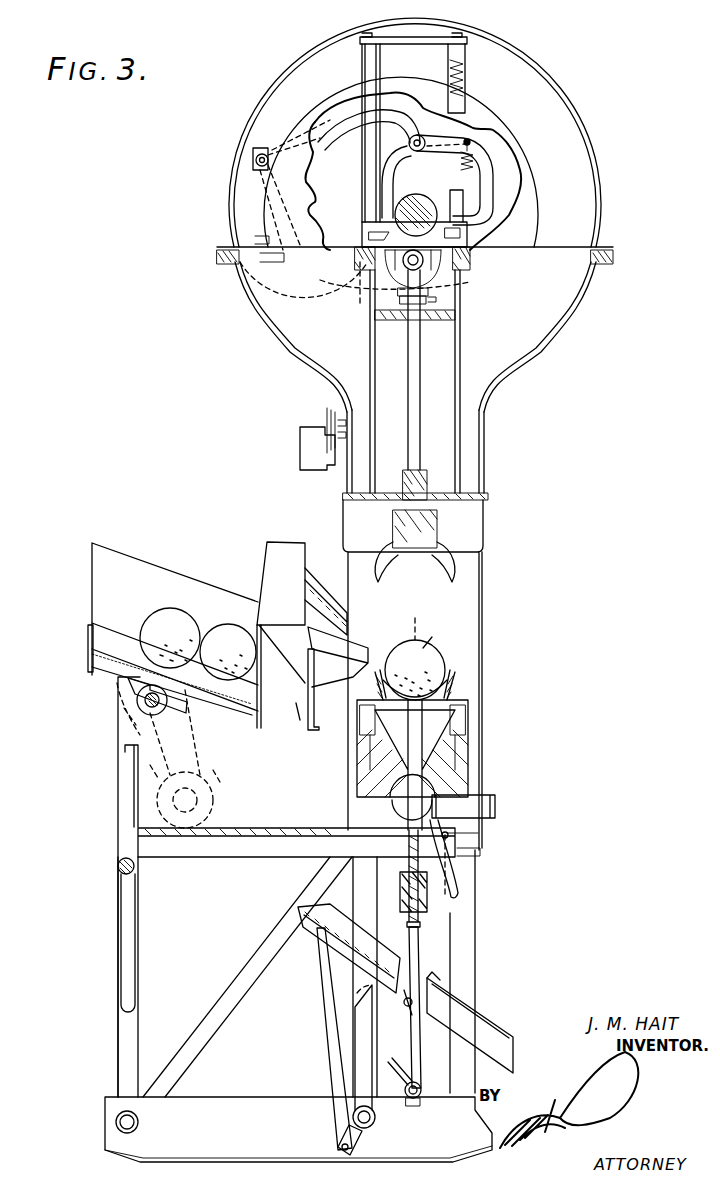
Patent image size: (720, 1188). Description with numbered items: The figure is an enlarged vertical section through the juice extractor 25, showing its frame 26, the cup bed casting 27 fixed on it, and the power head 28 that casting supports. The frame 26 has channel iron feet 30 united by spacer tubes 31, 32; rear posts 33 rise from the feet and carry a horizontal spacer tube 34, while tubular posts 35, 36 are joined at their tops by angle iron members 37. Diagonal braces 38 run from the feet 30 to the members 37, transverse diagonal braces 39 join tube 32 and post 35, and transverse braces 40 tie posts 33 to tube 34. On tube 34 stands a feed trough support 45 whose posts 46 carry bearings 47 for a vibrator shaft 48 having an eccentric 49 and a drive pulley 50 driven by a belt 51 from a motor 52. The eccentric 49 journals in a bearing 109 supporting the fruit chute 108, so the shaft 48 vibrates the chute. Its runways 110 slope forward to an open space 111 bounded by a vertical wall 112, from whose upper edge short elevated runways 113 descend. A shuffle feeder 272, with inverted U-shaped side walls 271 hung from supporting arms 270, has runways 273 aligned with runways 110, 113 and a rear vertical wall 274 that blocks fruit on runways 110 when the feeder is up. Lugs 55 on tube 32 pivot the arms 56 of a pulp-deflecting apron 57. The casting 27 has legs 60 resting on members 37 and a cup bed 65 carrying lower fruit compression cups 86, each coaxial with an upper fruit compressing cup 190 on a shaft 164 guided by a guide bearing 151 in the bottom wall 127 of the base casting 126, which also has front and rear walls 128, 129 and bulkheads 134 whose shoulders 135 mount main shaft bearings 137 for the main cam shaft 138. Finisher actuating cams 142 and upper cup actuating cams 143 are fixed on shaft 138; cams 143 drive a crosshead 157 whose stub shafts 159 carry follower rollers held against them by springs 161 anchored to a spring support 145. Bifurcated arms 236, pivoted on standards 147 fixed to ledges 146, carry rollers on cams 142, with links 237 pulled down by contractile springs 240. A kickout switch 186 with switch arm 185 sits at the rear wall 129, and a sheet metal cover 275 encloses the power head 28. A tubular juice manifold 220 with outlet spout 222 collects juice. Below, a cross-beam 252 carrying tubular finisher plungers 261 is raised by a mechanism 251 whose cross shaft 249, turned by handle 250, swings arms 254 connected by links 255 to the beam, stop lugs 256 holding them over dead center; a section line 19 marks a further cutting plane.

The juice extractor 25 is at (664, 63).
The sheet metal cover 275 is at (597, 154).
The bifurcated arms 236 is at (330, 124).
The ledges 146 is at (300, 262).
The standard 147 is at (253, 168).
The spring support 145 is at (400, 44).
The springs 161 is at (468, 85).
The upper cup actuating cams 143 is at (474, 116).
The links 237 is at (388, 178).
The finisher actuating cams 142 is at (478, 193).
The contractile springs 240 is at (473, 165).
The main cam shaft 138 is at (420, 202).
The main shaft bearings 137 is at (362, 230).
The shoulders 135 is at (356, 263).
The stub shafts 159 is at (419, 277).
The bulkheads 134 is at (333, 345).
The crosshead 157 is at (425, 320).
The shafts 164 is at (412, 398).
The guide bearings 151 is at (419, 478).
The rear wall 129 is at (300, 370).
The base casting 126 is at (535, 350).
The front wall 128 is at (543, 374).
The power head 28 is at (543, 411).
The switch arm 185 is at (326, 422).
The kickout switch 186 is at (305, 453).
The bottom wall 127 is at (376, 502).
The upper fruit compressing cup 190 is at (437, 532).
The fruit chute 108 is at (80, 664).
The runways 110 is at (105, 643).
The side walls 271 is at (276, 557).
The shuffle feeder 272 is at (270, 726).
The shuffle feeder supporting arms 270 is at (320, 590).
The fruit runways 273 is at (282, 652).
The short elevated runways 113 is at (366, 638).
The vertical wall 112 is at (313, 718).
The open space 111 is at (298, 722).
The rear vertical wall 274 is at (265, 718).
The bearing 109 is at (162, 706).
The vibrator shaft 48 is at (137, 698).
The bearings 47 is at (124, 717).
The eccentric 49 is at (166, 718).
The frame wall 46 is at (122, 733).
The feed trough support 45 is at (138, 790).
The drive pulley 50 is at (152, 732).
The belt 51 is at (190, 752).
The motor 52 is at (205, 784).
The cup bed casting 27 is at (478, 650).
The legs 60 is at (479, 658).
The section line 19 is at (412, 632).
The lower fruit compression cups 86 is at (456, 692).
The cup bed 65 is at (470, 746).
The tubular juice manifold 220 is at (395, 812).
The outlet spout 222 is at (472, 797).
The angle iron members 37 is at (236, 860).
The horizontal spacer tube 34 is at (118, 866).
The transverse braces 40 is at (121, 945).
The rear posts 33 is at (120, 1050).
The diagonal braces 38 is at (215, 1001).
The tubular posts 35 is at (355, 887).
The frame 26 is at (487, 907).
The pulp-deflecting apron 57 is at (316, 942).
The arms 56 is at (330, 1010).
The transverse diagonal braces 39 is at (362, 1039).
The spacer tube 32 is at (374, 1119).
The lugs 55 is at (356, 1142).
The channel iron feet 30 is at (250, 1102).
The spacer tube 31 is at (138, 1123).
The tubular finisher plungers 261 is at (409, 865).
The tubular posts 36 is at (462, 874).
The cross-beam 252 is at (398, 898).
The links 255 is at (416, 957).
The mechanism 251 is at (442, 992).
The stop lugs 256 is at (432, 1007).
The arms 254 is at (425, 1019).
The handle 250 is at (396, 1066).
The cross shaft 249 is at (417, 1083).